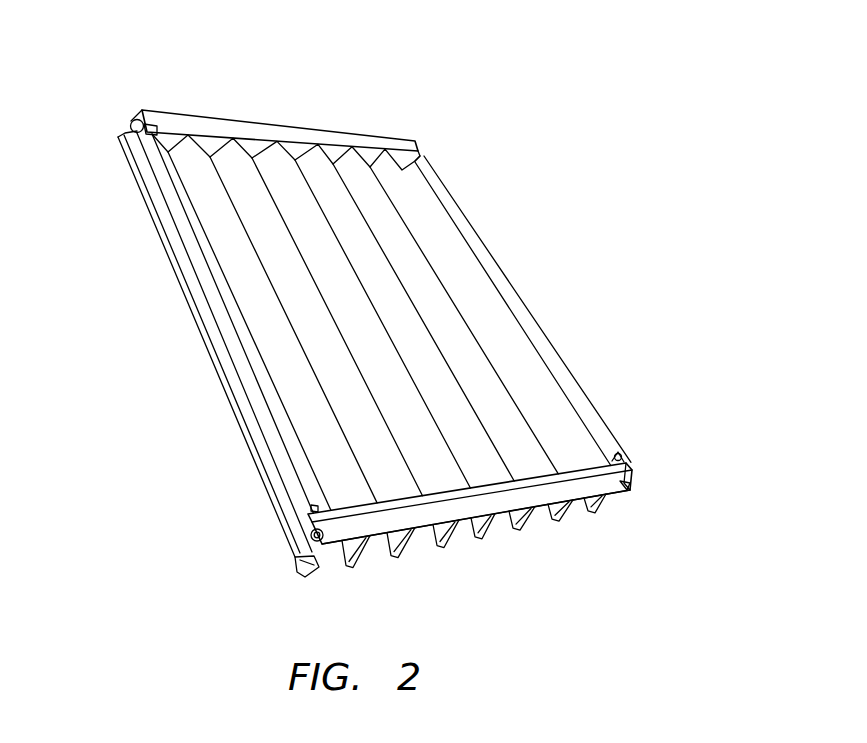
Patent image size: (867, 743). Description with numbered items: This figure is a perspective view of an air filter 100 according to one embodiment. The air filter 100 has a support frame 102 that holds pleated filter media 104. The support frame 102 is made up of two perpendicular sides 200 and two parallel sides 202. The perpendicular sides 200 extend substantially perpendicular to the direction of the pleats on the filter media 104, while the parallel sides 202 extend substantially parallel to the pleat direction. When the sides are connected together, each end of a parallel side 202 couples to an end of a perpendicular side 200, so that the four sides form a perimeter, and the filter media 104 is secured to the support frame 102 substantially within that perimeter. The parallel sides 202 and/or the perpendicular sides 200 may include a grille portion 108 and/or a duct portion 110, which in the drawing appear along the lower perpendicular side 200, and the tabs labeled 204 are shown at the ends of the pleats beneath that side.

The air filter 100 is at (412, 334).
The support frame 102 is at (419, 297).
The filter media 104 is at (400, 325).
The grille portion 108 is at (593, 495).
The duct portion 110 is at (487, 545).
The perpendicular side 200 is at (238, 118).
The parallel side 202 is at (230, 406).
The corrugation end tab 204 is at (358, 559).